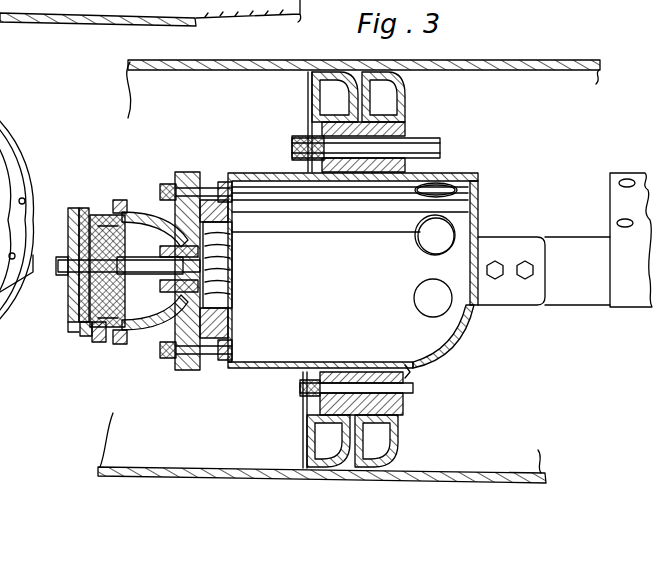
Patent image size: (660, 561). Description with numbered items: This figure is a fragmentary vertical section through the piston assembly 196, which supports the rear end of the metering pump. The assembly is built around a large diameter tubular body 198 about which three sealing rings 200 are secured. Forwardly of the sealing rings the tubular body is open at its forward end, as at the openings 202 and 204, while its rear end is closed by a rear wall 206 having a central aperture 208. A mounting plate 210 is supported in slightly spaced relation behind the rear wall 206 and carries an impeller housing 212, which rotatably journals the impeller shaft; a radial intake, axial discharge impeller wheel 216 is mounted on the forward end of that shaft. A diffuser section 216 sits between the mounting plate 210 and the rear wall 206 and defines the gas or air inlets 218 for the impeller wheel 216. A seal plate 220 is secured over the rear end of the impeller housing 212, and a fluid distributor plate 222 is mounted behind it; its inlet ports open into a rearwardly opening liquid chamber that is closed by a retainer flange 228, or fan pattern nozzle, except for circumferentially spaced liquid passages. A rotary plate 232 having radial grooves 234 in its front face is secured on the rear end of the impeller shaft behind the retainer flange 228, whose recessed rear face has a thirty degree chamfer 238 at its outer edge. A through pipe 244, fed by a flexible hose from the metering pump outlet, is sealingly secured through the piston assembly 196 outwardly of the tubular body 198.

The piston assembly 196 is at (470, 155).
The tubular body 198 is at (275, 172).
The sealing rings 200 is at (398, 110).
The forward opening 202 is at (430, 340).
The forward opening 204 is at (415, 240).
The rear wall 206 is at (226, 214).
The central aperture 208 is at (226, 316).
The mounting plate 210 is at (190, 172).
The impeller housing 212 is at (135, 216).
The impeller wheel 216 is at (218, 266).
The gas or air inlets 218 is at (213, 210).
The seal plate 220 is at (93, 312).
The fluid distributor plate 222 is at (102, 216).
The retainer flange 228 is at (87, 324).
The rotary plate 232 is at (67, 300).
The radial grooves 234 is at (66, 212).
The chamfer 238 is at (86, 208).
The through pipe 244 is at (433, 150).